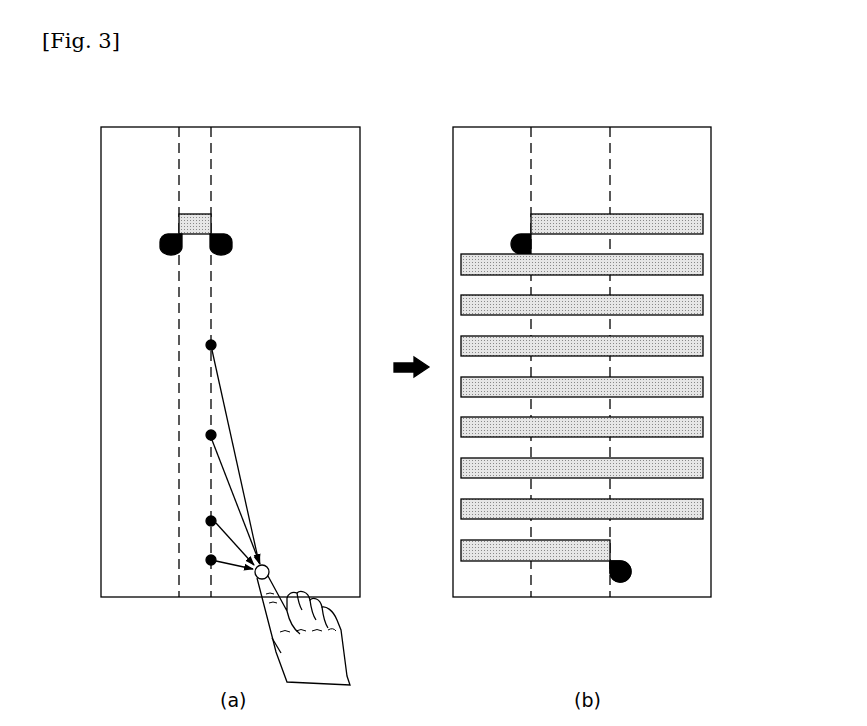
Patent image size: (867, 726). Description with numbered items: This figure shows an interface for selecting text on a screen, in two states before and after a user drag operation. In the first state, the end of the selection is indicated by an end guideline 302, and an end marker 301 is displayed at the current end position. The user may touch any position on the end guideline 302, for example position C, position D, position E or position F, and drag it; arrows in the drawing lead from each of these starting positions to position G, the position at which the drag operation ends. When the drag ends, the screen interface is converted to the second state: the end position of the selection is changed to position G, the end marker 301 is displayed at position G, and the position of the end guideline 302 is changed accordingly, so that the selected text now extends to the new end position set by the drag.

The end marker 301 is at (179, 220).
The end guideline 302 is at (212, 160).
The position C is at (232, 448).
The position D is at (224, 494).
The position E is at (221, 537).
The position F is at (221, 560).
The position G is at (450, 562).